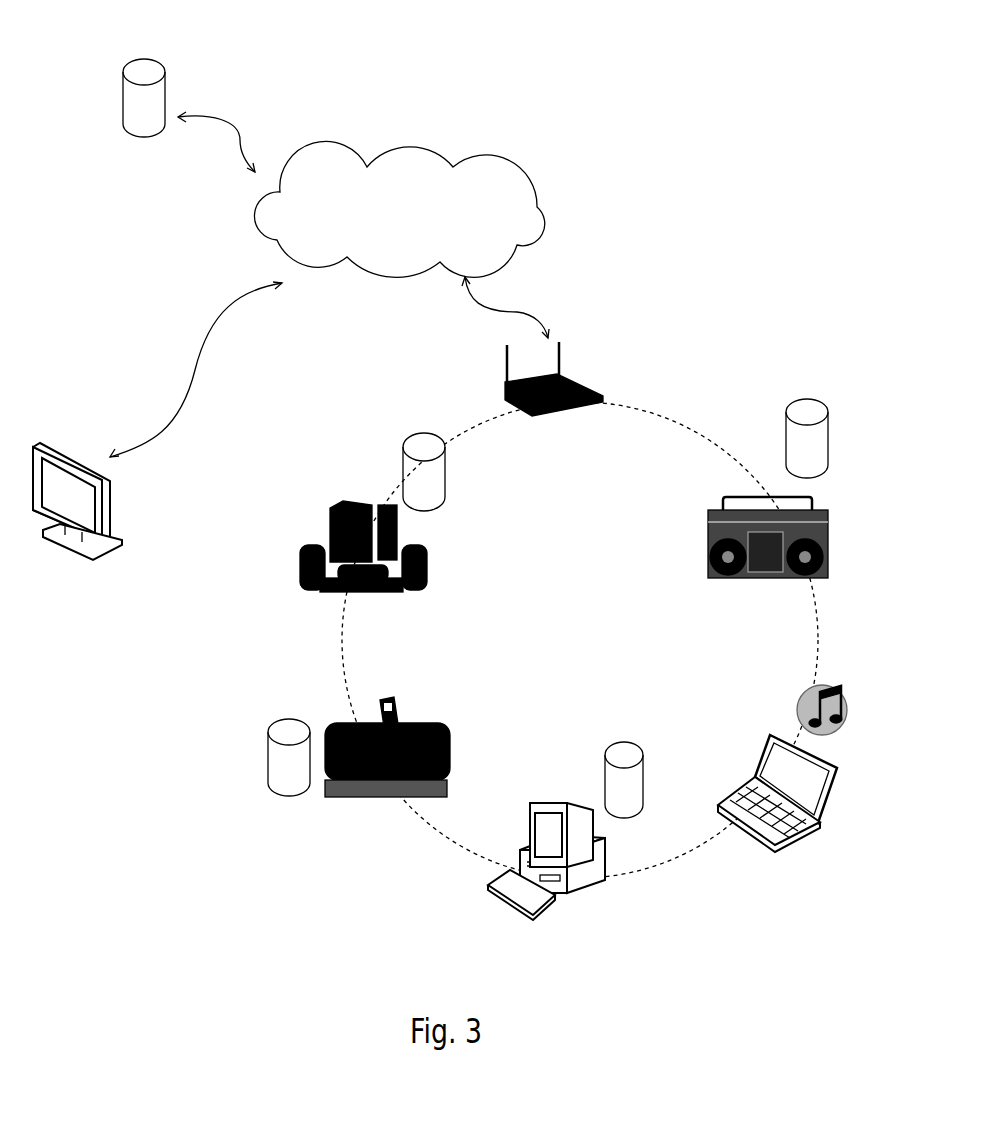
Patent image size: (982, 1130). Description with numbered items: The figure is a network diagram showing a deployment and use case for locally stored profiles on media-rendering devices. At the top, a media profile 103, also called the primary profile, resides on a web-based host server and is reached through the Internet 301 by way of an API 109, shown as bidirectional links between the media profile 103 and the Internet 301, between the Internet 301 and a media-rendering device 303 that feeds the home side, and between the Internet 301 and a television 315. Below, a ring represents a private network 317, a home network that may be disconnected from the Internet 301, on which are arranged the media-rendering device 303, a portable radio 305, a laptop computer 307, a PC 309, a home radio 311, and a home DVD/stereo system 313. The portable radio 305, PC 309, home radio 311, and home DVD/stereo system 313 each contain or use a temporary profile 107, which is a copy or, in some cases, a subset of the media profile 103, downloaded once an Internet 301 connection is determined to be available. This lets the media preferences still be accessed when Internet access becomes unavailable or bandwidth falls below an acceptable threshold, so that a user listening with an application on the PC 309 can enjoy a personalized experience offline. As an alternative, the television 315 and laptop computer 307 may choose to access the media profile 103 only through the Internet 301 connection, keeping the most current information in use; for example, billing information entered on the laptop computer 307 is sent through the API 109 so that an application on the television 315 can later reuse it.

The media profile 103 is at (123, 85).
The temporary profile 107 is at (401, 458).
The API 109 is at (288, 112).
The Internet 301 is at (553, 195).
The media-rendering device 303 is at (578, 360).
The portable radio 305 is at (703, 538).
The laptop computer 307 is at (765, 738).
The PC 309 is at (484, 885).
The home radio 311 is at (374, 713).
The home DVD/stereo system 313 is at (318, 530).
The television 315 is at (115, 510).
The private network 317 is at (508, 643).